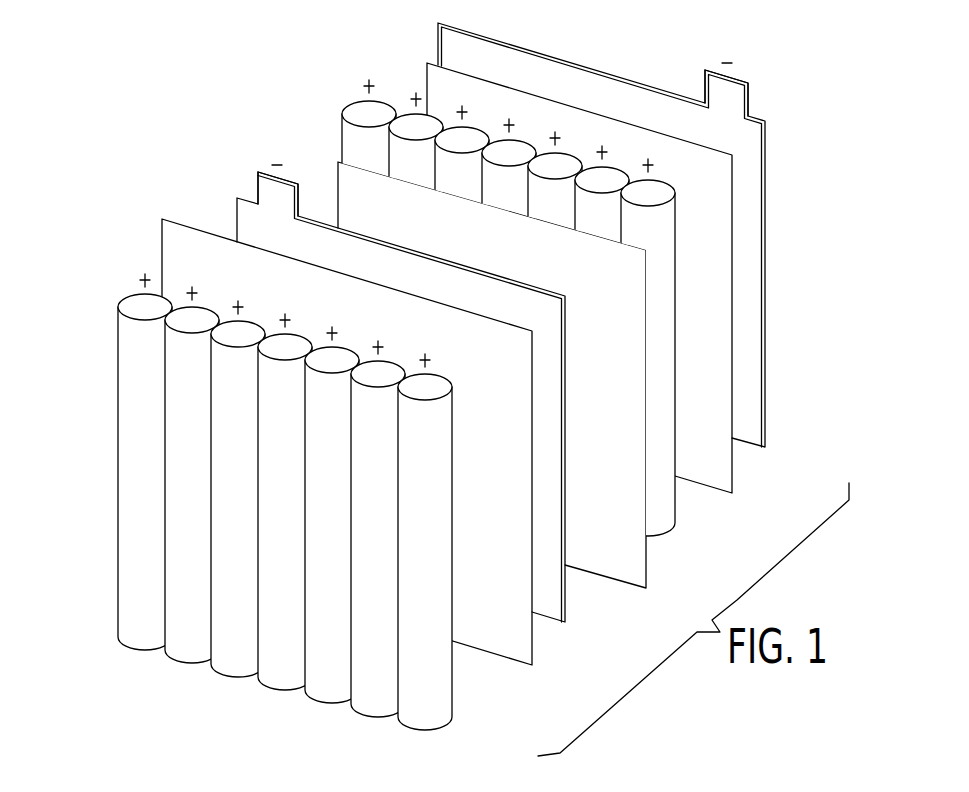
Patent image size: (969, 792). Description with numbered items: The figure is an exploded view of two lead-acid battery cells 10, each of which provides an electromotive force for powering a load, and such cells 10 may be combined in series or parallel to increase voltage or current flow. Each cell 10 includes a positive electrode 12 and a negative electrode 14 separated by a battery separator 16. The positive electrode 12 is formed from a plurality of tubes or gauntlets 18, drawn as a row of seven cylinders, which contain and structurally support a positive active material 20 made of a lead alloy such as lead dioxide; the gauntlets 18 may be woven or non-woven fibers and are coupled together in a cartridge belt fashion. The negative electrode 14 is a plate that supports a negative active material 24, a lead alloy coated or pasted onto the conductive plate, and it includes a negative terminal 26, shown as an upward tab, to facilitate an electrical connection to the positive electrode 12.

The lead-acid battery cell 10 is at (441, 398).
The positive electrode 12 is at (379, 405).
The negative electrode 14 is at (494, 342).
The battery separator 16 is at (538, 667).
The gauntlet 18 is at (128, 331).
The positive active material 20 is at (140, 302).
The negative active material 24 is at (255, 213).
The negative terminal 26 is at (255, 185).